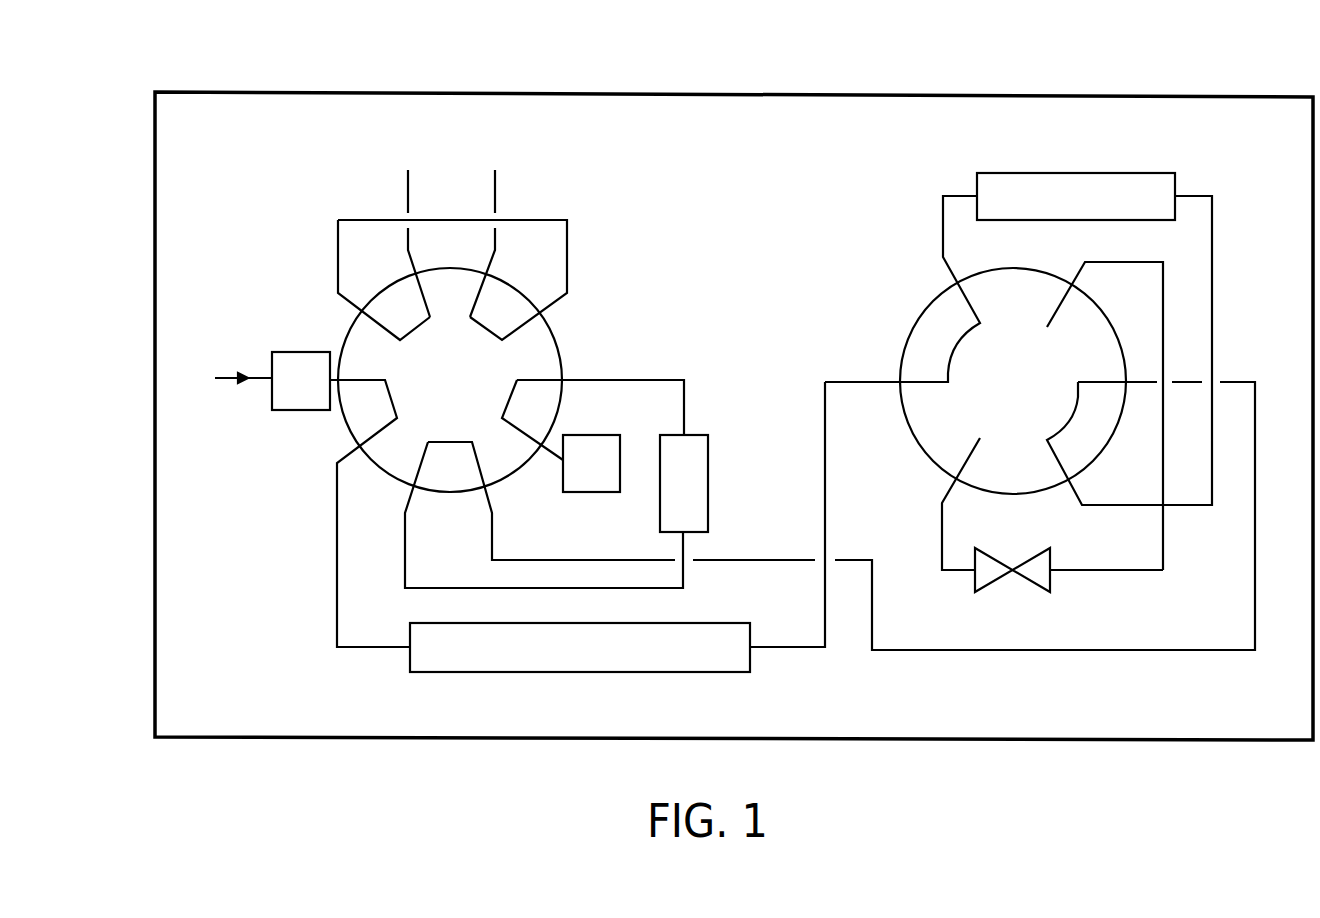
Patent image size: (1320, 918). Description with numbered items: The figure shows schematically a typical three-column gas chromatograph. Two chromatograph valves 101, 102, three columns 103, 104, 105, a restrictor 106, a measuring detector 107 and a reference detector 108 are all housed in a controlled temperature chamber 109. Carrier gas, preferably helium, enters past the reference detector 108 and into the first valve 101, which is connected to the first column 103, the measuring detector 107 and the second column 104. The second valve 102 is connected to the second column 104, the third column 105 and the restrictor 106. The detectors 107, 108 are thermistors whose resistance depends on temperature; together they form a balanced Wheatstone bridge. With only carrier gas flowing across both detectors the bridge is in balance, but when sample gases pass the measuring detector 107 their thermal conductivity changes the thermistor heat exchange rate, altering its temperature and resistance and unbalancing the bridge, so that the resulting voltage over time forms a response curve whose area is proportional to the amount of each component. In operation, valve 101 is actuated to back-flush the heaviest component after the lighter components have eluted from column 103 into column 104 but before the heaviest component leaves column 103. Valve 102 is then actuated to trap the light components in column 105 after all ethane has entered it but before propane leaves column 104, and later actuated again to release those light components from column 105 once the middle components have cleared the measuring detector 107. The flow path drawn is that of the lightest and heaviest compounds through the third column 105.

The chromatograph valve 101 is at (550, 333).
The chromatograph valve 102 is at (918, 323).
The column 103 is at (690, 472).
The column 104 is at (617, 652).
The column 105 is at (1083, 188).
The restrictor 106 is at (1050, 590).
The measuring detector 107 is at (568, 497).
The reference detector 108 is at (275, 358).
The controlled temperature chamber 109 is at (363, 105).